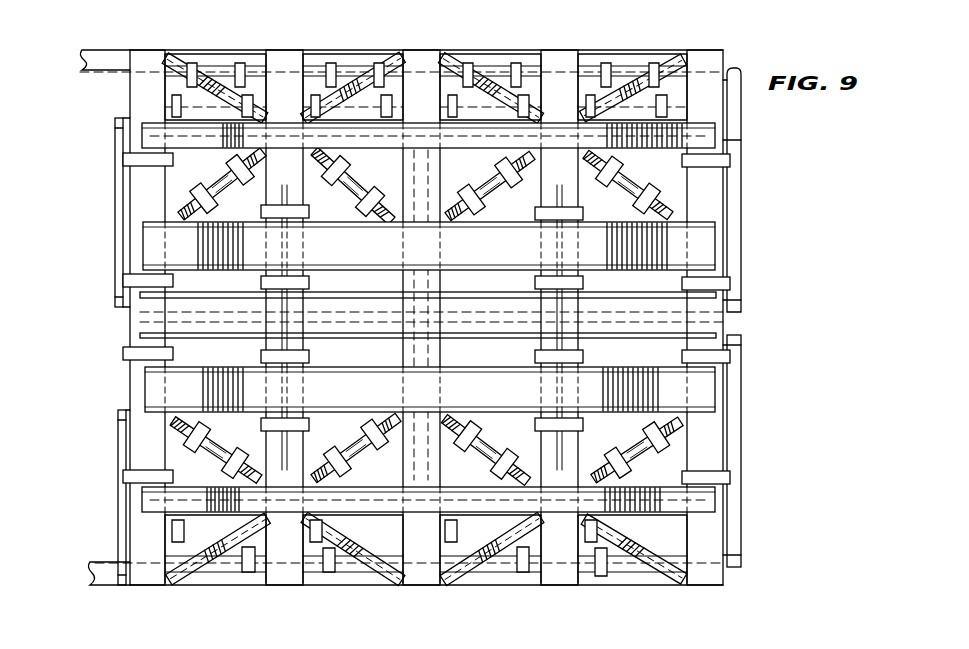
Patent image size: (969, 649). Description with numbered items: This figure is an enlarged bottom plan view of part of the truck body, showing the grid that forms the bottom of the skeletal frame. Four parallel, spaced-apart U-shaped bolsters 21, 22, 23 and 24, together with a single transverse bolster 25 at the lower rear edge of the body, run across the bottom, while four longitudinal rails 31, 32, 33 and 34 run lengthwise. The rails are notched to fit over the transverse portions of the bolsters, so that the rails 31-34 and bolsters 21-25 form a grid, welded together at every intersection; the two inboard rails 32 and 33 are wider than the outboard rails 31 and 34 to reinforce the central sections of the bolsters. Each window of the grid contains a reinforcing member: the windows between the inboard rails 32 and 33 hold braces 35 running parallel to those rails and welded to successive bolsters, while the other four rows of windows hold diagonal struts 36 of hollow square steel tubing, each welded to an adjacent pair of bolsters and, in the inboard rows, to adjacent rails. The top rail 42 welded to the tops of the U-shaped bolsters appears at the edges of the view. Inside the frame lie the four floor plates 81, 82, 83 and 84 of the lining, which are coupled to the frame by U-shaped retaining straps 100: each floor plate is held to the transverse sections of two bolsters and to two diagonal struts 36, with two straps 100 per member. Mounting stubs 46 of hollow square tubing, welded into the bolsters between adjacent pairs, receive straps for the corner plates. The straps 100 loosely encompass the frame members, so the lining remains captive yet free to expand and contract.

The front bolster 21 is at (152, 48).
The U-shaped bolster 22 is at (290, 48).
The U-shaped bolster 23 is at (424, 48).
The U-shaped bolster 24 is at (562, 48).
The transverse bolster 25 is at (708, 46).
The longitudinal rail 31 is at (708, 142).
The longitudinal rail 32 is at (707, 250).
The longitudinal rail 33 is at (710, 390).
The longitudinal rail 34 is at (722, 465).
The brace 35 is at (190, 295).
The diagonal strut 36 is at (213, 70).
The top rail 42 is at (97, 71).
The mounting stub 46 is at (242, 560).
The floor plate 81 is at (120, 420).
The floor plate 82 is at (116, 172).
The floor plate 83 is at (742, 410).
The floor plate 84 is at (742, 184).
The retaining strap 100 is at (730, 162).